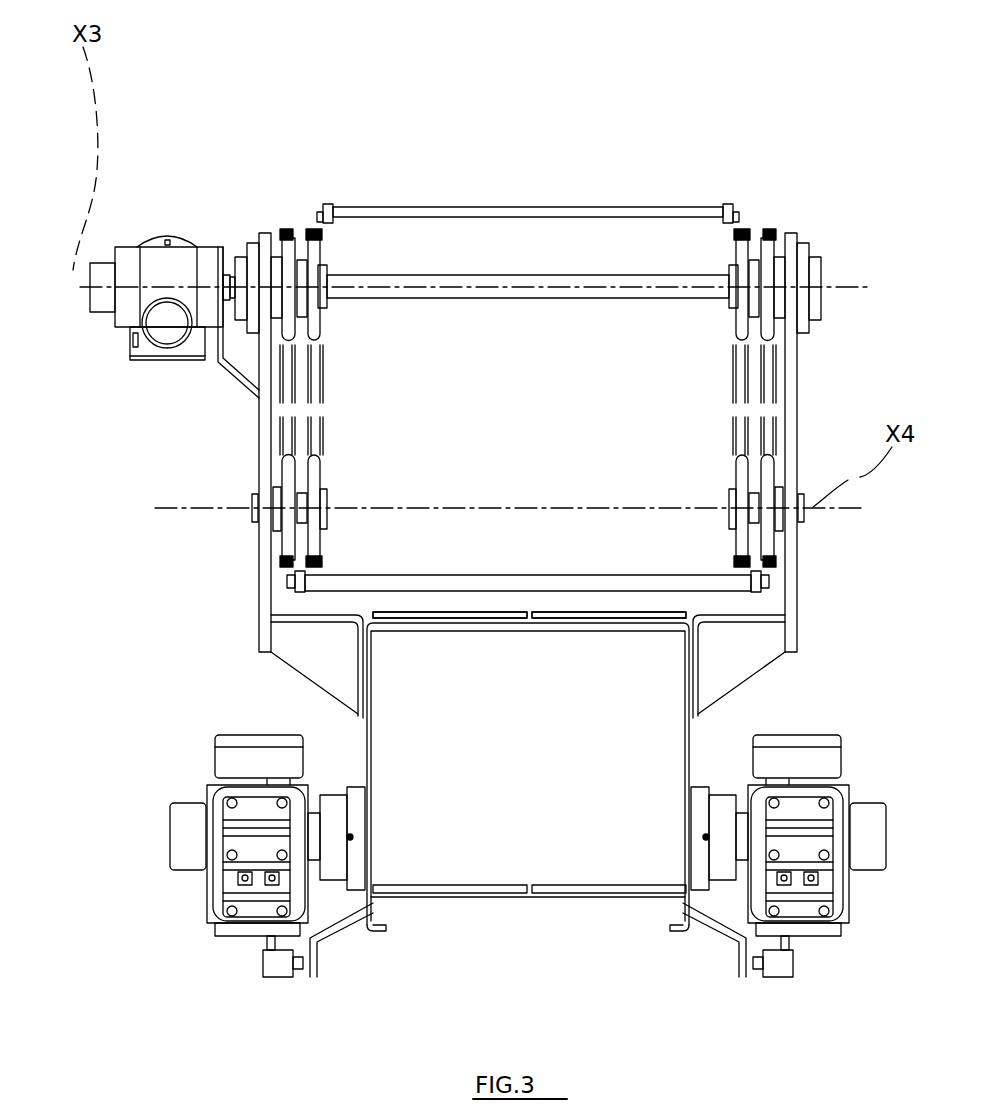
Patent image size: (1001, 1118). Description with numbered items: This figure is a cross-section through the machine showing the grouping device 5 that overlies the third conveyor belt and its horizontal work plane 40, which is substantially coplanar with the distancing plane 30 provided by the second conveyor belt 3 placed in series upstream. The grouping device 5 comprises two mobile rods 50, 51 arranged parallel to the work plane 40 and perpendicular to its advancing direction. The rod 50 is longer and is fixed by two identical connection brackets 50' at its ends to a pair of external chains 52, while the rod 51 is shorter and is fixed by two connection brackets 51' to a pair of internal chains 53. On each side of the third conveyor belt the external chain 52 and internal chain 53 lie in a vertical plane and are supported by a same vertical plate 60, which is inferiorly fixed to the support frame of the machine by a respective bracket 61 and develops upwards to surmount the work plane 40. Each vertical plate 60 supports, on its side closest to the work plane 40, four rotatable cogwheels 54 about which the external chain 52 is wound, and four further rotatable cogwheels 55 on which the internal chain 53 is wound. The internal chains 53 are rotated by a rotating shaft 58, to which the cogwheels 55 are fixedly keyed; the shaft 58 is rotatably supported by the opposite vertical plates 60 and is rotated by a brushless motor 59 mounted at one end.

The second conveyor belt 3 is at (440, 885).
The grouping device 5 is at (197, 200).
The distancing plane 30 is at (450, 612).
The work plane 40 is at (529, 615).
The mobile rod 50 is at (528, 557).
The connection bracket 50' is at (514, 585).
The mobile rod 51 is at (528, 172).
The connection bracket 51' is at (538, 142).
The external chain 52 is at (290, 427).
The internal chain 53 is at (313, 404).
The cogwheel 54 is at (247, 250).
The cogwheel 55 is at (300, 228).
The rotating shaft 58 is at (603, 272).
The brushless motor 59 is at (121, 246).
The vertical plate 60 is at (265, 603).
The bracket 61 is at (305, 660).